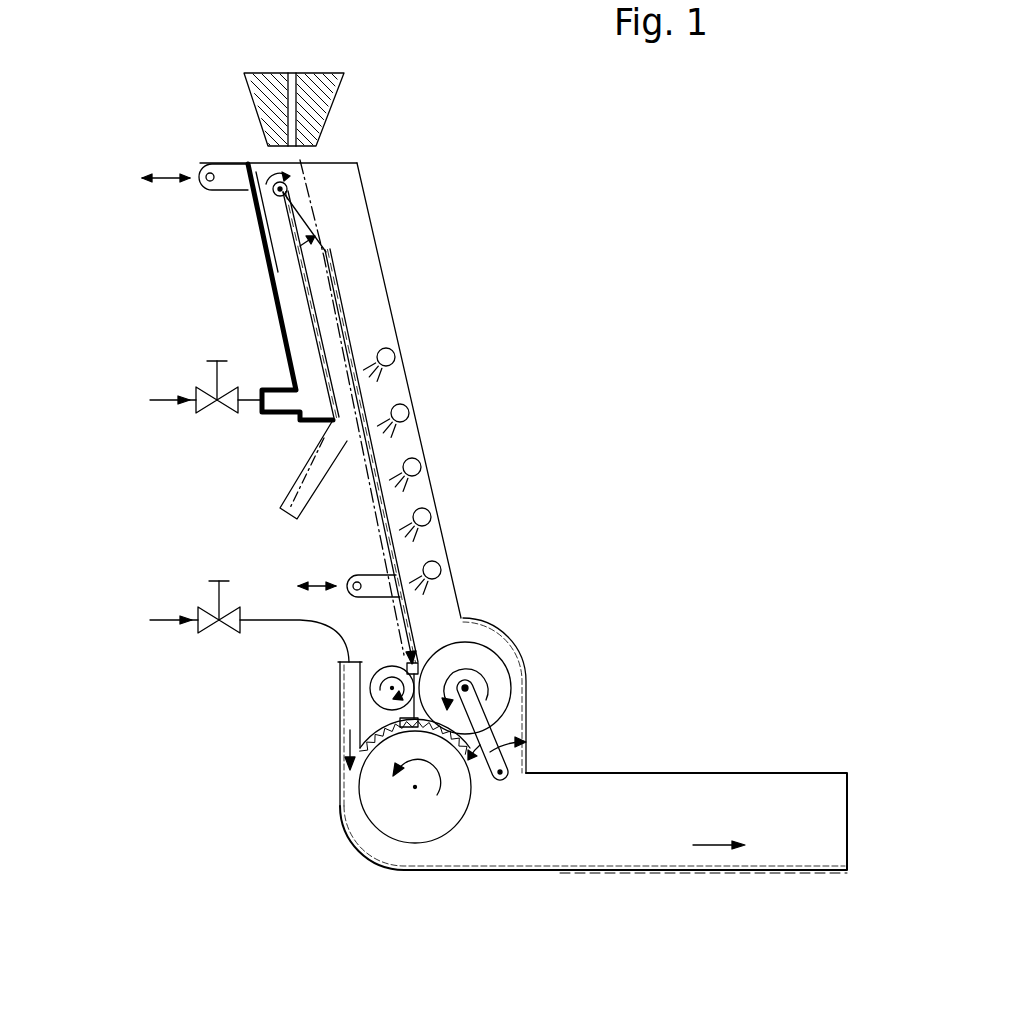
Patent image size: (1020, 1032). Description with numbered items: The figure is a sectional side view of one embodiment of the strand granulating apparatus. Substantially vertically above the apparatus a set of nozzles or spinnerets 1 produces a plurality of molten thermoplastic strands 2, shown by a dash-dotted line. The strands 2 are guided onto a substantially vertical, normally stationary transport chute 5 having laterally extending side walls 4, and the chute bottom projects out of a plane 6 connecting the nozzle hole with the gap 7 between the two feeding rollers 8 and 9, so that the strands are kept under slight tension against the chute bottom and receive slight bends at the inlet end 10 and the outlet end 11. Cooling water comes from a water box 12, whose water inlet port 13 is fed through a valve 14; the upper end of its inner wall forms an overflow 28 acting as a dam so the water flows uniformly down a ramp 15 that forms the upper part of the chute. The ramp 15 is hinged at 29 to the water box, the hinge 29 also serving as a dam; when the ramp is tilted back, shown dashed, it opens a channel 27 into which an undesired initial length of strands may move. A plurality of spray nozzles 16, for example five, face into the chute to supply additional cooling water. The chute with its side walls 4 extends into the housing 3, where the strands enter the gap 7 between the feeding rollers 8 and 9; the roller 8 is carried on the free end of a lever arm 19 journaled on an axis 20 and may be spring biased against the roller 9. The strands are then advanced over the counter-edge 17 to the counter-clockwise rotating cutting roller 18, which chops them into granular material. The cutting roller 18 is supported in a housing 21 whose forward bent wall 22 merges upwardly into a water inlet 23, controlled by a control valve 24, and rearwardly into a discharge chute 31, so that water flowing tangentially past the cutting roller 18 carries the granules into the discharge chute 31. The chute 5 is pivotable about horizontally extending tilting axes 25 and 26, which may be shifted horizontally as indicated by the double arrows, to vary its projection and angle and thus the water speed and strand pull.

The spinneret 1 is at (318, 152).
The strands 2 is at (345, 188).
The housing 3 is at (521, 648).
The side walls 4 is at (373, 318).
The transport chute 5 is at (345, 343).
The plane 6 is at (323, 292).
The gap 7 is at (388, 668).
The feeding roller 8 is at (484, 621).
The feeding roller 9 is at (380, 698).
The inlet end 10 is at (332, 256).
The outlet end 11 is at (472, 657).
The water box 12 is at (278, 270).
The water inlet port 13 is at (274, 403).
The valve 14 is at (215, 380).
The ramp 15 is at (328, 250).
The spray nozzles 16 is at (441, 568).
The counter-edge 17 is at (378, 718).
The cutting roller 18 is at (377, 787).
The lever arm 19 is at (477, 712).
The axis 20 is at (503, 770).
The housing 21 is at (607, 867).
The bent wall 22 is at (360, 846).
The water inlet 23 is at (345, 662).
The control valve 24 is at (217, 604).
The tilting axis 25 is at (203, 170).
The tilting axis 26 is at (355, 577).
The channel 27 is at (312, 495).
The overflow 28 is at (275, 195).
The hinge 29 is at (276, 176).
The discharge chute 31 is at (702, 800).